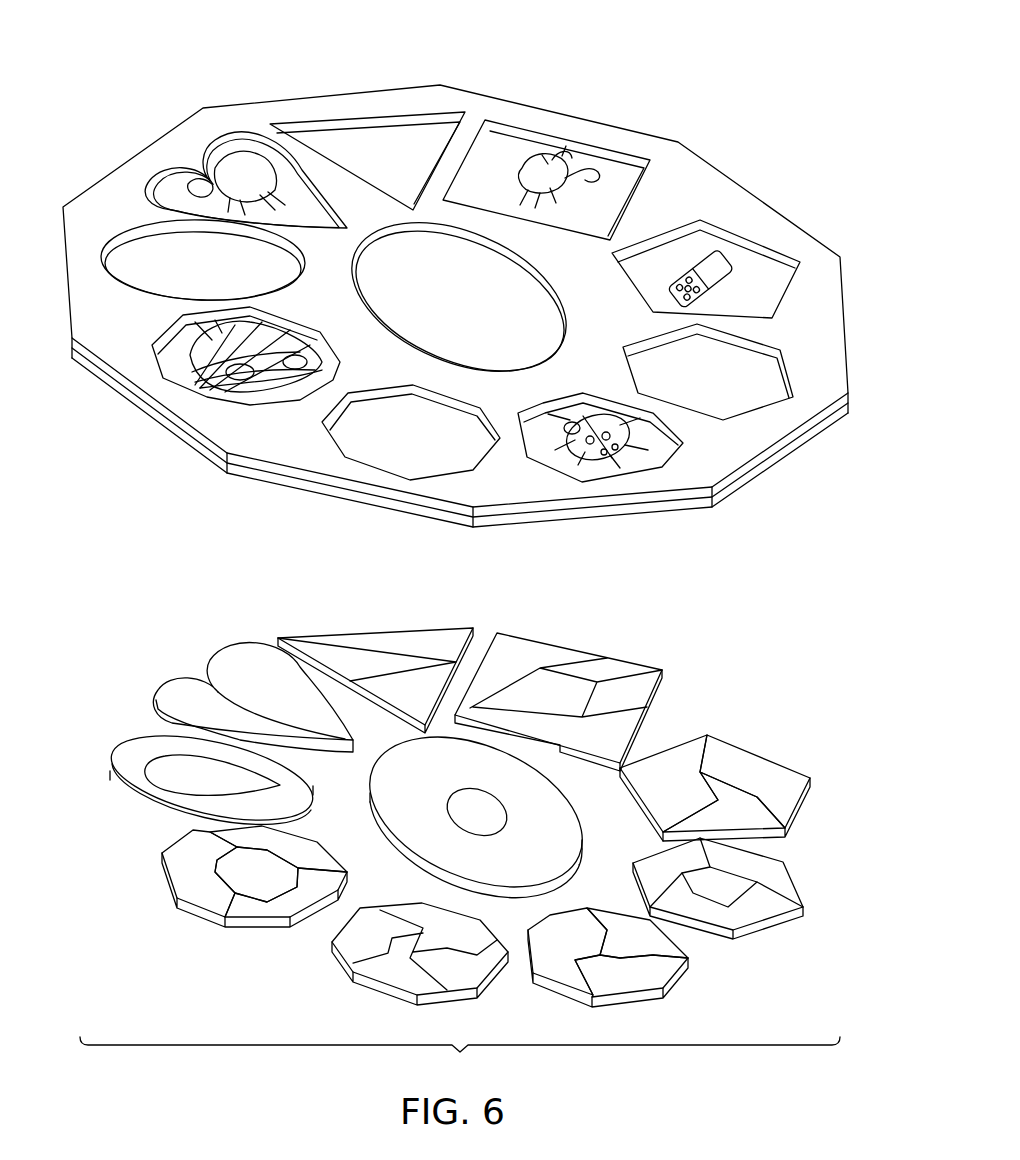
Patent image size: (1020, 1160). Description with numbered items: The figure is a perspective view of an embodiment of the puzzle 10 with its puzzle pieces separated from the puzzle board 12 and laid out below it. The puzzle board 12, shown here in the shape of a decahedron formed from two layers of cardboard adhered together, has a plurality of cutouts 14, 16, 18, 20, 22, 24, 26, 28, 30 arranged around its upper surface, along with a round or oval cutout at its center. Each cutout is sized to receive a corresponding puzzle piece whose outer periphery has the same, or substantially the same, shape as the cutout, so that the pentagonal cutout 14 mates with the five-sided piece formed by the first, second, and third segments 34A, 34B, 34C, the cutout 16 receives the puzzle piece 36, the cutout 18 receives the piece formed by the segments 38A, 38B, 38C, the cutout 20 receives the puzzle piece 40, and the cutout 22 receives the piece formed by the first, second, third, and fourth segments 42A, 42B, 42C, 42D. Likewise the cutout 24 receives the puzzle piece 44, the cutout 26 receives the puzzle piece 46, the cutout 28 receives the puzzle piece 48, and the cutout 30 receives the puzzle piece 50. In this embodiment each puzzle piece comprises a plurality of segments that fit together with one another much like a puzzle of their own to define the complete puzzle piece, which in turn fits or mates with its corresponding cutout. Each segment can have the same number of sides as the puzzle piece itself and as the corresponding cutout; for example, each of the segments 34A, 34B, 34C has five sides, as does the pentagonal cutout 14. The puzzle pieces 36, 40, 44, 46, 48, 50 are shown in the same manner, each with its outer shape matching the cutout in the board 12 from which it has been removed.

The puzzle 10 is at (712, 56).
The puzzle board 12 is at (724, 188).
The cutout 14 is at (767, 294).
The cutout 16 is at (722, 383).
The cutout 18 is at (657, 455).
The cutout 20 is at (424, 446).
The cutout 22 is at (277, 398).
The cutout 24 is at (204, 273).
The cutout 26 is at (222, 134).
The cutout 28 is at (400, 165).
The cutout 30 is at (493, 140).
The first segment 34A is at (781, 775).
The second segment 34B is at (758, 815).
The third segment 34C is at (657, 760).
The puzzle piece 36 is at (757, 918).
The first segment 38A is at (650, 985).
The second segment 38B is at (560, 968).
The third segment 38C is at (616, 918).
The puzzle piece 40 is at (385, 988).
The first segment 42A is at (287, 917).
The second segment 42B is at (318, 860).
The third segment 42C is at (180, 871).
The fourth segment 42D is at (248, 885).
The puzzle piece 44 is at (137, 795).
The puzzle piece 46 is at (236, 655).
The puzzle piece 48 is at (418, 640).
The puzzle piece 50 is at (547, 653).